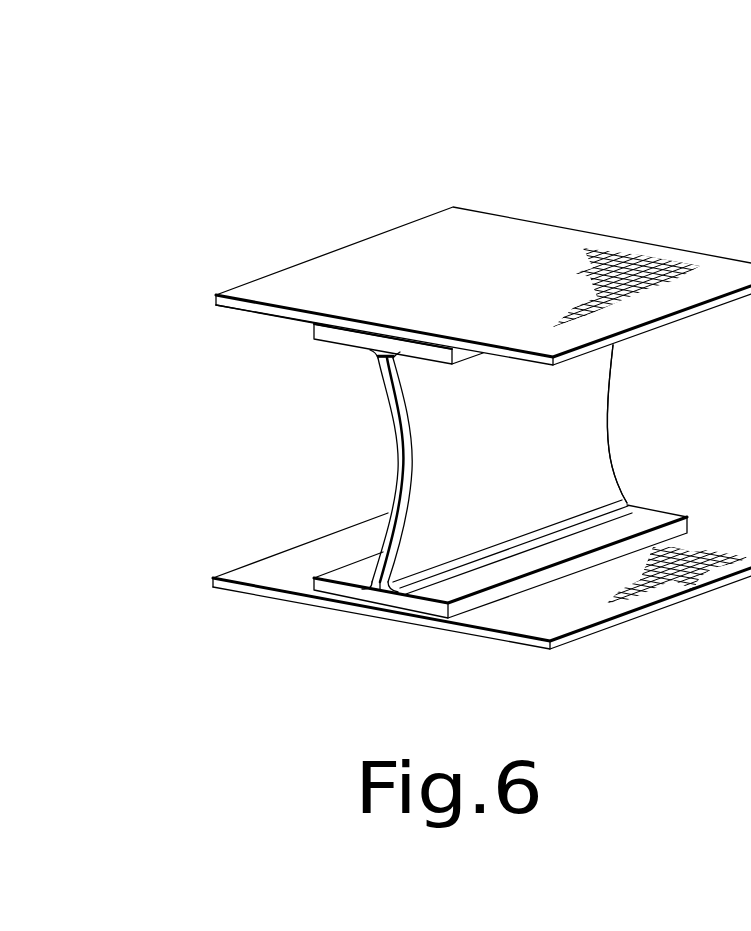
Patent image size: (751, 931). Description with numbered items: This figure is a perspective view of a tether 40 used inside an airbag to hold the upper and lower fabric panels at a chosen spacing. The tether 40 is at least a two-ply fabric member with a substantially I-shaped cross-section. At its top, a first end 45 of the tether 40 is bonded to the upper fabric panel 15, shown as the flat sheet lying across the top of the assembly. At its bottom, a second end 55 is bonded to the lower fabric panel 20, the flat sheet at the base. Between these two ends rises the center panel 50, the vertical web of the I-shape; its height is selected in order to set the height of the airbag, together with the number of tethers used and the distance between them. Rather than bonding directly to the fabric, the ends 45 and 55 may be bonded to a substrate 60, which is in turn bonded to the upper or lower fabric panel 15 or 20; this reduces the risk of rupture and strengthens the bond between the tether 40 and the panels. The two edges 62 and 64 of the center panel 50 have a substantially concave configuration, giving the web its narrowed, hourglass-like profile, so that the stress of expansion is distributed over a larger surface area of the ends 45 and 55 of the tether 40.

The upper fabric panel 15 is at (480, 240).
The lower fabric panel 20 is at (505, 638).
The tether 40 is at (612, 456).
The first end 45 is at (377, 350).
The center panel 50 is at (531, 461).
The second end 55 is at (374, 593).
The substrate 60 is at (318, 323).
The edge of center panel 62 is at (399, 447).
The edge of center panel 64 is at (612, 372).